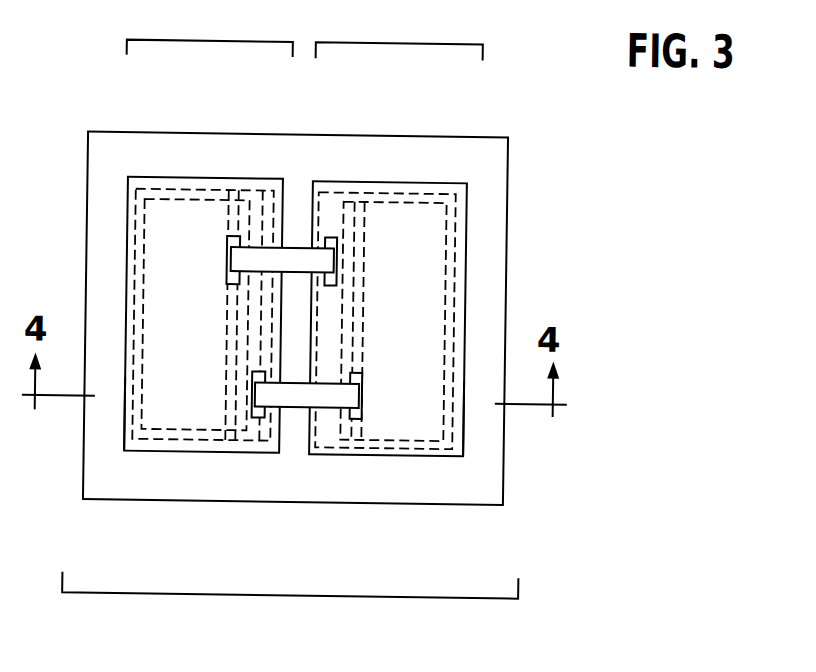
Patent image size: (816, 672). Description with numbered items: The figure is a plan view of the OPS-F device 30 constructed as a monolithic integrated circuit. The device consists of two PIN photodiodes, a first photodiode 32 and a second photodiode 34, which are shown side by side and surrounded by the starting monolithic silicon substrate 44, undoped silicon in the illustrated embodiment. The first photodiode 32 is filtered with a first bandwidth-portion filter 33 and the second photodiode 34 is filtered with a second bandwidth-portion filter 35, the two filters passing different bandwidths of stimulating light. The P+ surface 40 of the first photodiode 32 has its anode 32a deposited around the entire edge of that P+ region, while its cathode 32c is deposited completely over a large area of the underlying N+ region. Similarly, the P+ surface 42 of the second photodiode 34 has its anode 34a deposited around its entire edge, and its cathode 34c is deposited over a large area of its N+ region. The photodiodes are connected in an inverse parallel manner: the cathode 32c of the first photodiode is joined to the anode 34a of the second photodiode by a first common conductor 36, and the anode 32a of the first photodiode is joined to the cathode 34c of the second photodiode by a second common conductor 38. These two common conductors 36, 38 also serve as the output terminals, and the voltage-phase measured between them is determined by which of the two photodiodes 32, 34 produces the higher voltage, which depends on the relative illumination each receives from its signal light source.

The OPS-F device 30 is at (306, 595).
The first photodiode 32 is at (196, 39).
The anode of the first photodiode 32a is at (226, 241).
The cathode of the first photodiode 32c is at (256, 190).
The first bandwidth-portion filter 33 is at (126, 405).
The second photodiode 34 is at (394, 42).
The anode of the second photodiode 34a is at (454, 275).
The cathode of the second photodiode 34c is at (339, 241).
The second bandwidth-portion filter 35 is at (469, 408).
The first common conductor 36 is at (319, 402).
The second common conductor 38 is at (264, 258).
The P+ surface of the first photodiode 40 is at (134, 228).
The P+ surface of the second photodiode 42 is at (432, 236).
The silicon substrate 44 is at (306, 153).